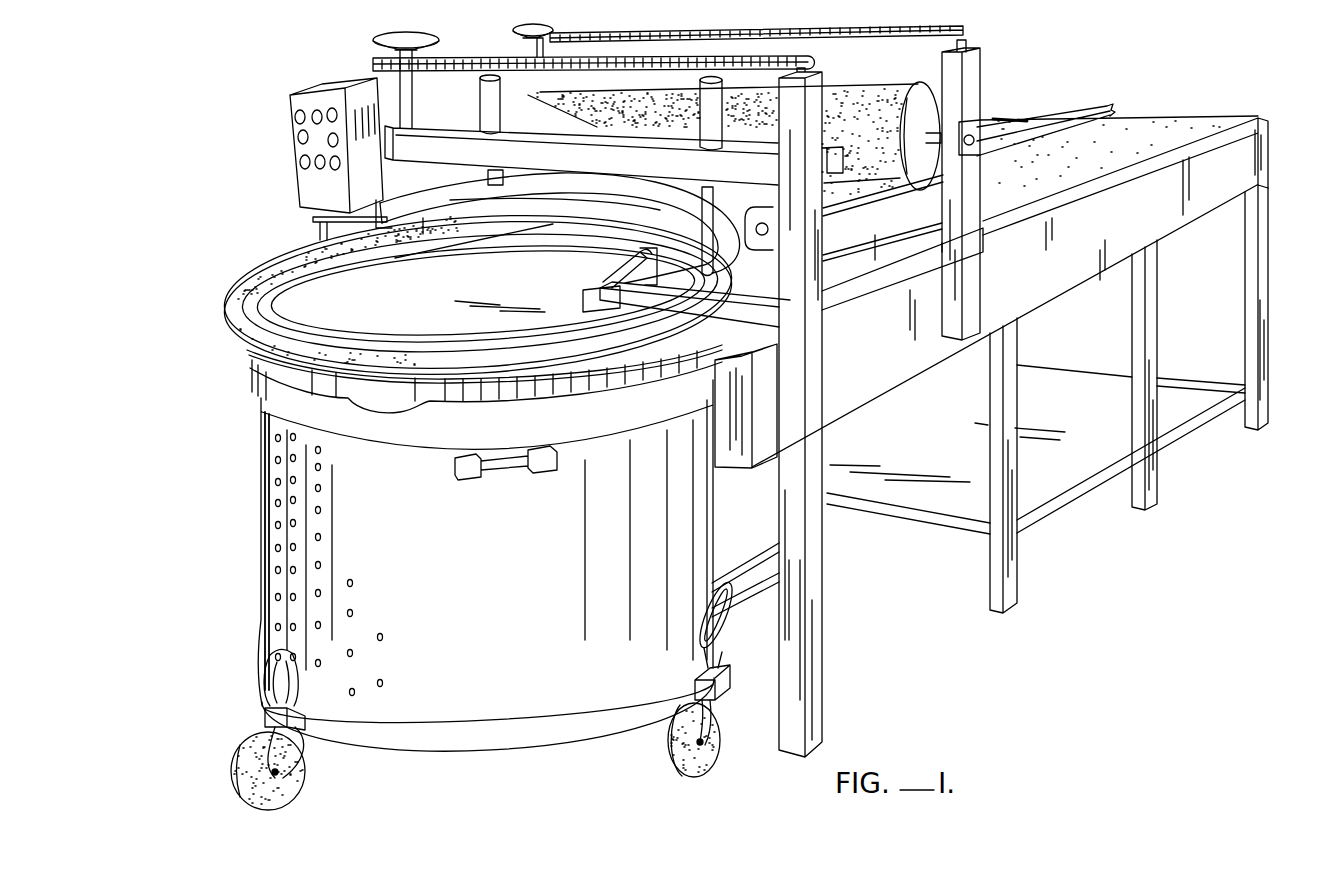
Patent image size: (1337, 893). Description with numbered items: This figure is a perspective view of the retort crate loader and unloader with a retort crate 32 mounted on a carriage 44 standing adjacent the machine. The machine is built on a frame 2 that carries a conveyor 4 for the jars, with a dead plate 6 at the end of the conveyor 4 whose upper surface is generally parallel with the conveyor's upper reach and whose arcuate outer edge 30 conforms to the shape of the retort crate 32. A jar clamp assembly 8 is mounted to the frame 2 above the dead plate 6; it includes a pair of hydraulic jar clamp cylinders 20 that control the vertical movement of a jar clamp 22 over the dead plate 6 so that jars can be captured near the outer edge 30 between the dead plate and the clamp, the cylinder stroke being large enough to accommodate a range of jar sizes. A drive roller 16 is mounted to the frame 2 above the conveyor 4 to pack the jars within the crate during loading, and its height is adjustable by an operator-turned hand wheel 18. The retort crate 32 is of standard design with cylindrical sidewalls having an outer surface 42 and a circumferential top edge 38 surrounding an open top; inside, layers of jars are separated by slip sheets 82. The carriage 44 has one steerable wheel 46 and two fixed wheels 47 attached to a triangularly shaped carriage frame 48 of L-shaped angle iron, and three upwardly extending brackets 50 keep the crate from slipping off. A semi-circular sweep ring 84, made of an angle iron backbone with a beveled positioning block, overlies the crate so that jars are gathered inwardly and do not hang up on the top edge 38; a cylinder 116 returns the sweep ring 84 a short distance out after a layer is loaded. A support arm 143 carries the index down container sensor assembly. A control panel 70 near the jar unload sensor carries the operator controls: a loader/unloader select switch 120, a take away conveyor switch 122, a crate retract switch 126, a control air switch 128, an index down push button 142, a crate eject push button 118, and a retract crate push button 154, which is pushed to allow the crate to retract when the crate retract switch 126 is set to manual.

The frame 2 is at (1281, 228).
The conveyor 4 is at (1165, 128).
The dead plate 6 is at (598, 223).
The jar clamp assembly 8 is at (596, 122).
The drive roller 16 is at (860, 85).
The hand wheel 18 is at (546, 26).
The jar clamp cylinders 20 is at (480, 99).
The jar clamp 22 is at (543, 200).
The arcuate outer edge 30 is at (548, 236).
The retort crate 32 is at (261, 530).
The circumferential top edge 38 is at (246, 356).
The outer surface 42 is at (300, 478).
The carriage 44 is at (540, 733).
The steerable wheel 46 is at (300, 782).
The fixed wheels 47 is at (706, 774).
The carriage frame 48 is at (722, 683).
The brackets 50 is at (268, 684).
The control panel 70 is at (300, 92).
The slip sheets 82 is at (383, 320).
The sweep ring 84 is at (231, 318).
The cylinder 116 is at (866, 193).
The crate eject push button 118 is at (300, 162).
The loader/unloader select switch 120 is at (334, 110).
The take away conveyor switch 122 is at (299, 134).
The crate retract switch 126 is at (328, 141).
The control air switch 128 is at (305, 114).
The index down push button 142 is at (319, 169).
The support arm 143 is at (757, 325).
The retract crate push button 154 is at (333, 170).